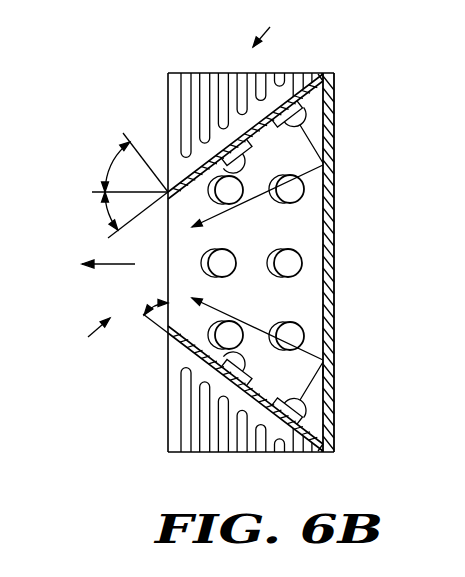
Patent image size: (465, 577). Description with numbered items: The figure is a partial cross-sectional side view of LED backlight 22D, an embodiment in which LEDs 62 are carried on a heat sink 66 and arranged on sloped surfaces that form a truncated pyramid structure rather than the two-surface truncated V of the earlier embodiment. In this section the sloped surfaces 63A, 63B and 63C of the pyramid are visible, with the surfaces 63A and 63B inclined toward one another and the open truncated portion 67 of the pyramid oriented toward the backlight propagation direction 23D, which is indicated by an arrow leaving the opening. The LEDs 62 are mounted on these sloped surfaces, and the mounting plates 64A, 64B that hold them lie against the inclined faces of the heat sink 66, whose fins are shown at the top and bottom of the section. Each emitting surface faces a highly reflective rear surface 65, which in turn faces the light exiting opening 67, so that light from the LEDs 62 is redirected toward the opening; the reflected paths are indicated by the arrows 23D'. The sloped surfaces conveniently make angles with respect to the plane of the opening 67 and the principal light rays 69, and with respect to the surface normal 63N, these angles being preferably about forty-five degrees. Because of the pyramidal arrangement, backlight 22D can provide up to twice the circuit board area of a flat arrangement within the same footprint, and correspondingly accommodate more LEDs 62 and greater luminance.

The LED backlight 22D is at (279, 25).
The heat sink 66 is at (211, 73).
The upper inclined mounting plate 64A is at (311, 74).
The lower inclined mounting plate 64B is at (173, 360).
The sloped surface 63A is at (314, 88).
The sloped surface 63B is at (314, 432).
The sloped surface 63C is at (312, 312).
The surface normal 63N is at (124, 132).
The highly reflective rear surface 65 is at (318, 230).
The principal light rays 69 is at (325, 372).
The LEDs 62 is at (283, 130).
The reflected light direction 23D' is at (257, 262).
The backlight propagation direction 23D is at (110, 284).
The open truncated portion 67 is at (85, 338).